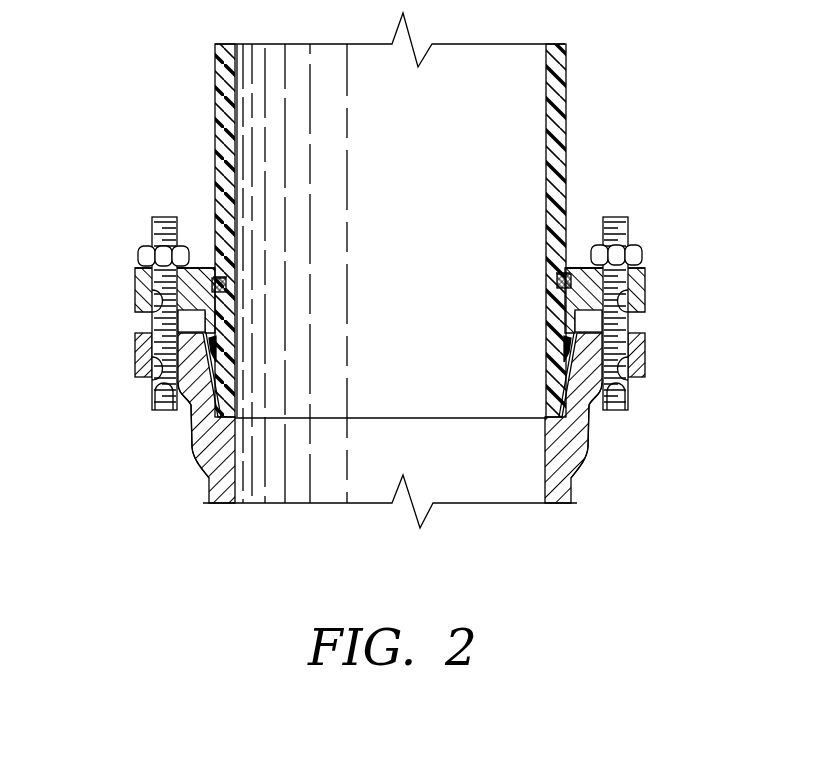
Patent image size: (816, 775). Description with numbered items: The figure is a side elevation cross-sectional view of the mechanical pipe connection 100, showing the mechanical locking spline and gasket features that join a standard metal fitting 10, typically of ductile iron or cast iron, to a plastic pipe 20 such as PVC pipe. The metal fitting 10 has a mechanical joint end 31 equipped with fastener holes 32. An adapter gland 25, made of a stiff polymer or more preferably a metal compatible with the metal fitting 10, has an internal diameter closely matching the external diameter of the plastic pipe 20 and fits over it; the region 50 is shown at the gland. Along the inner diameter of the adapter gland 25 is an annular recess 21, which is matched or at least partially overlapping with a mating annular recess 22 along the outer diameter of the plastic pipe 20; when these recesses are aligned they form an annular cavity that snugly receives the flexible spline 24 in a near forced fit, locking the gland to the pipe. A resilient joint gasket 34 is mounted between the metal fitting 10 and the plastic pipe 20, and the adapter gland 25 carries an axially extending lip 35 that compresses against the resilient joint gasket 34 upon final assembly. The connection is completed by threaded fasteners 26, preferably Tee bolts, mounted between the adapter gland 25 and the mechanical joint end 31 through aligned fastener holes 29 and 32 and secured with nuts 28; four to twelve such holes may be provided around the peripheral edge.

The mechanical pipe connection 100 is at (518, 567).
The plastic pipe 20 is at (216, 90).
The metal fitting 10 is at (192, 468).
The resilient joint gasket 34 is at (181, 412).
The axially extending lip 35 is at (218, 347).
The adapter gland 25 is at (145, 292).
The flange top surface 50 is at (136, 268).
The annular recess 21 is at (207, 266).
The mechanical joint end 31 is at (135, 341).
The threaded fasteners 26 is at (163, 410).
The nuts 28 is at (139, 250).
The fastener holes 29 is at (157, 302).
The fastener holes 32 is at (153, 383).
The mating annular recess 22 is at (228, 288).
The flexible spline 24 is at (226, 284).